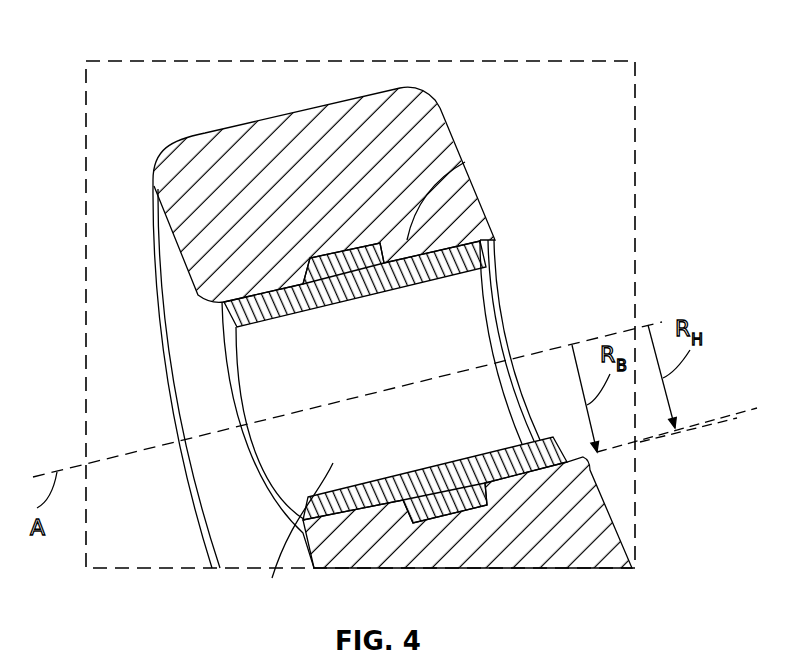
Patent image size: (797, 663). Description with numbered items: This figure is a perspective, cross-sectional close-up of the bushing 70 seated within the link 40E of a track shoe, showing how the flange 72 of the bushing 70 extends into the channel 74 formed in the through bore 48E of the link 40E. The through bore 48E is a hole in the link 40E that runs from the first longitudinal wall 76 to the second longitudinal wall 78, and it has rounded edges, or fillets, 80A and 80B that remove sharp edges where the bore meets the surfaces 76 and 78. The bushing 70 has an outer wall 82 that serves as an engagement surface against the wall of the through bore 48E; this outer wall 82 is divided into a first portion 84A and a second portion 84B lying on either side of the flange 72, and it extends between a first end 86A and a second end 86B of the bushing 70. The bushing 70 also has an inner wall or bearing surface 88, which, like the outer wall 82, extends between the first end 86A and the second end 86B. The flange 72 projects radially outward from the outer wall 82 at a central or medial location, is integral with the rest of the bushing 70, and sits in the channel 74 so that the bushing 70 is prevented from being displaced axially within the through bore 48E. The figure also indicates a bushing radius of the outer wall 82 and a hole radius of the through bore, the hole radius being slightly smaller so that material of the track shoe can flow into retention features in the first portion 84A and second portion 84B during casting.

The link 40E is at (377, 112).
The bushing 70 is at (251, 192).
The flange 72 is at (327, 267).
The channel 74 is at (372, 242).
The first longitudinal wall 76 is at (166, 232).
The second longitudinal wall 78 is at (492, 218).
The rounded edge 80A is at (219, 362).
The rounded edge 80B is at (492, 337).
The outer wall 82 is at (458, 235).
The first portion 84A is at (272, 288).
The second portion 84B is at (465, 162).
The first end 86A is at (247, 423).
The second end 86B is at (483, 297).
The inner bearing surface 88 is at (333, 463).
The through bore 48E is at (260, 497).